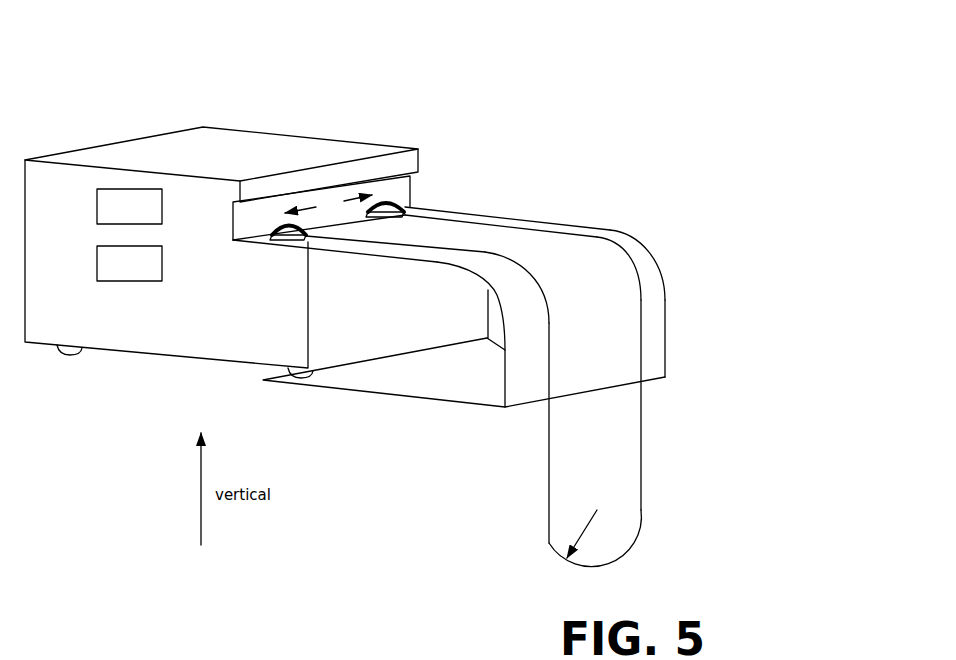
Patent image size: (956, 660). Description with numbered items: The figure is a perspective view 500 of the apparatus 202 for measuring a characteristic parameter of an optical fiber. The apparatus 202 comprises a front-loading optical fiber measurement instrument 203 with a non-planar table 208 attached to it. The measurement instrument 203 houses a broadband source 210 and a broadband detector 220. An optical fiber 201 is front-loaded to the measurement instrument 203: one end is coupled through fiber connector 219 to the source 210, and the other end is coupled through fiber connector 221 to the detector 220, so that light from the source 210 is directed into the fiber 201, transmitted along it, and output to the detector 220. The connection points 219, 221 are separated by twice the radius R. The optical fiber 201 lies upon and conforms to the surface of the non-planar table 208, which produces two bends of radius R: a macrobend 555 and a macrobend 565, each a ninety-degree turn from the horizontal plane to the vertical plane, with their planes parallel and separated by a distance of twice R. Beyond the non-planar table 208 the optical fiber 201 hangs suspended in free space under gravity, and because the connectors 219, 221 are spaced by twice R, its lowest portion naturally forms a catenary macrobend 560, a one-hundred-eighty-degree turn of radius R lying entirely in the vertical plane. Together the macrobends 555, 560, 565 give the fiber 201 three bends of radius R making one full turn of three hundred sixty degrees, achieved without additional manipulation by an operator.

The perspective view 500 is at (658, 82).
The apparatus 202 is at (493, 112).
The optical fiber measurement instrument 203 is at (155, 305).
The source 210 is at (113, 216).
The detector 220 is at (113, 274).
The fiber connector 219 is at (277, 239).
The fiber connector 221 is at (402, 205).
The non-planar table 208 is at (545, 212).
The macrobend 565 is at (612, 247).
The macrobend 555 is at (500, 268).
The optical fiber 201 is at (542, 443).
The catenary macrobend 560 is at (543, 553).